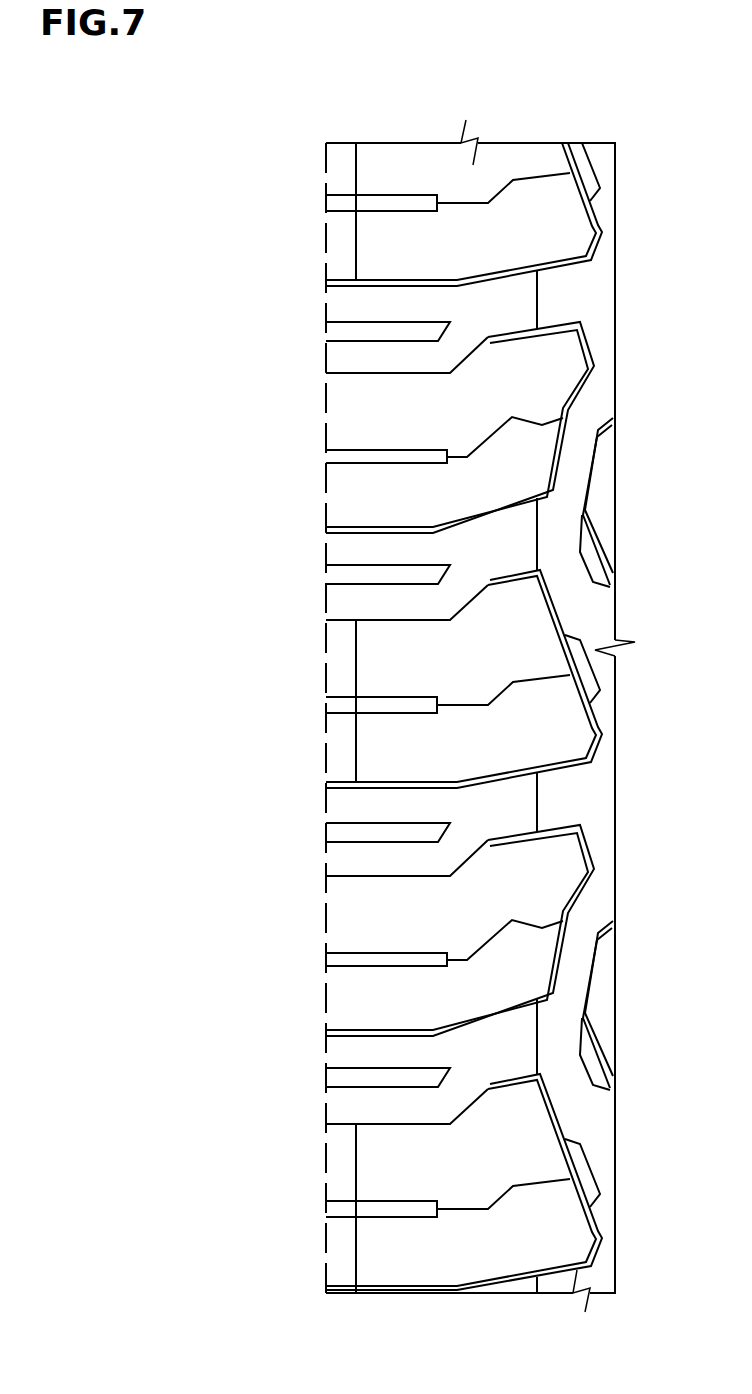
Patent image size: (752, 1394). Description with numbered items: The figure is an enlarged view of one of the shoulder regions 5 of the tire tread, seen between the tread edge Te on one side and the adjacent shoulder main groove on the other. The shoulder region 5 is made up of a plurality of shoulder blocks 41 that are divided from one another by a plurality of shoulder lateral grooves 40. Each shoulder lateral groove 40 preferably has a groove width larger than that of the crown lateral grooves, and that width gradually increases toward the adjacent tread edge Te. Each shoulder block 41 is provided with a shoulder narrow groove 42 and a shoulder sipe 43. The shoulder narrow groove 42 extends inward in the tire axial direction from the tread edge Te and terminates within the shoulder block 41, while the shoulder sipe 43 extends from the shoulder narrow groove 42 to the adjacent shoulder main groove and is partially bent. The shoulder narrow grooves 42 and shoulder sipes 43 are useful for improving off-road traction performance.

The shoulder region 5 is at (439, 158).
The tread edge Te is at (325, 170).
The shoulder lateral groove 40 is at (422, 286).
The shoulder block 41 is at (498, 395).
The shoulder narrow groove 42 is at (382, 457).
The shoulder sipe 43 is at (493, 437).